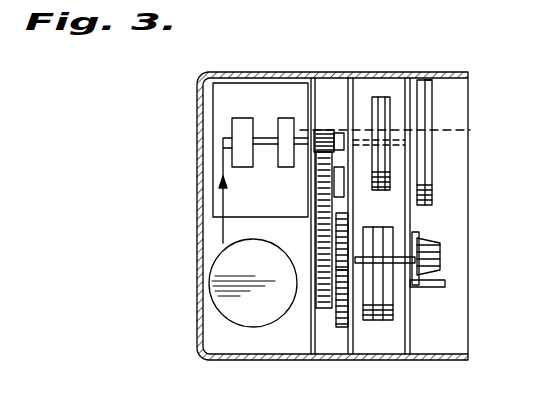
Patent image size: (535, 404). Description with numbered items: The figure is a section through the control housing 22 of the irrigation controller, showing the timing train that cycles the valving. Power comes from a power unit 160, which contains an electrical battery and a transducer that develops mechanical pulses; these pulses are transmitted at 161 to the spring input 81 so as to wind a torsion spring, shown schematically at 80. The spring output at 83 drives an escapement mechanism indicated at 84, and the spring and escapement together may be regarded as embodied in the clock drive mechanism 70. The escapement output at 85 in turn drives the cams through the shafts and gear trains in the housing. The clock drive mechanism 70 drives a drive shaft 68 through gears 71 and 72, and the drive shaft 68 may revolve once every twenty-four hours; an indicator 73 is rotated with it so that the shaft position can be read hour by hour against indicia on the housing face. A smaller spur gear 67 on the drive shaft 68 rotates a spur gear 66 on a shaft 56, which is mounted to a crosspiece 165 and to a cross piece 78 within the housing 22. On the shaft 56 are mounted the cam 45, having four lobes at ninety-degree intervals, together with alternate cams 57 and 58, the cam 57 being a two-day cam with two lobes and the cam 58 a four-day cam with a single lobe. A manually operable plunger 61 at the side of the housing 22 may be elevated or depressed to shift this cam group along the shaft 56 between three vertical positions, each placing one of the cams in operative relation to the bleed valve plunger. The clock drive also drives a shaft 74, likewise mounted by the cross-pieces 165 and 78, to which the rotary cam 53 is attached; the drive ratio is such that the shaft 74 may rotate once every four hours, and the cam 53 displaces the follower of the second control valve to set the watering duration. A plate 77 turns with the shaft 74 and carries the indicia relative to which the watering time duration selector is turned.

The control housing 22 is at (471, 71).
The clock drive mechanism 70 is at (210, 108).
The spring input 81 is at (222, 135).
The torsion spring 80 is at (240, 130).
The escapement mechanism 84 is at (287, 118).
The spring output 83 is at (265, 138).
The escapement output 85 is at (301, 142).
The crosspiece 165 is at (360, 87).
The drive shaft 68 is at (400, 228).
The shaft 74 is at (470, 130).
The gear 72 is at (318, 295).
The gear 71 is at (318, 192).
The smaller spur gear 67 is at (348, 248).
The spur gear 66 is at (337, 322).
The rotary cam 53 is at (380, 96).
The cross piece 78 is at (425, 80).
The plate 77 is at (425, 178).
The shaft 56 is at (393, 295).
The cam 45 is at (368, 312).
The cam 57 is at (378, 320).
The cam 58 is at (393, 313).
The indicator 73 is at (428, 278).
The manually operable plunger 61 is at (430, 292).
The power unit 160 is at (233, 300).
The mechanical pulse transmission 161 is at (220, 240).